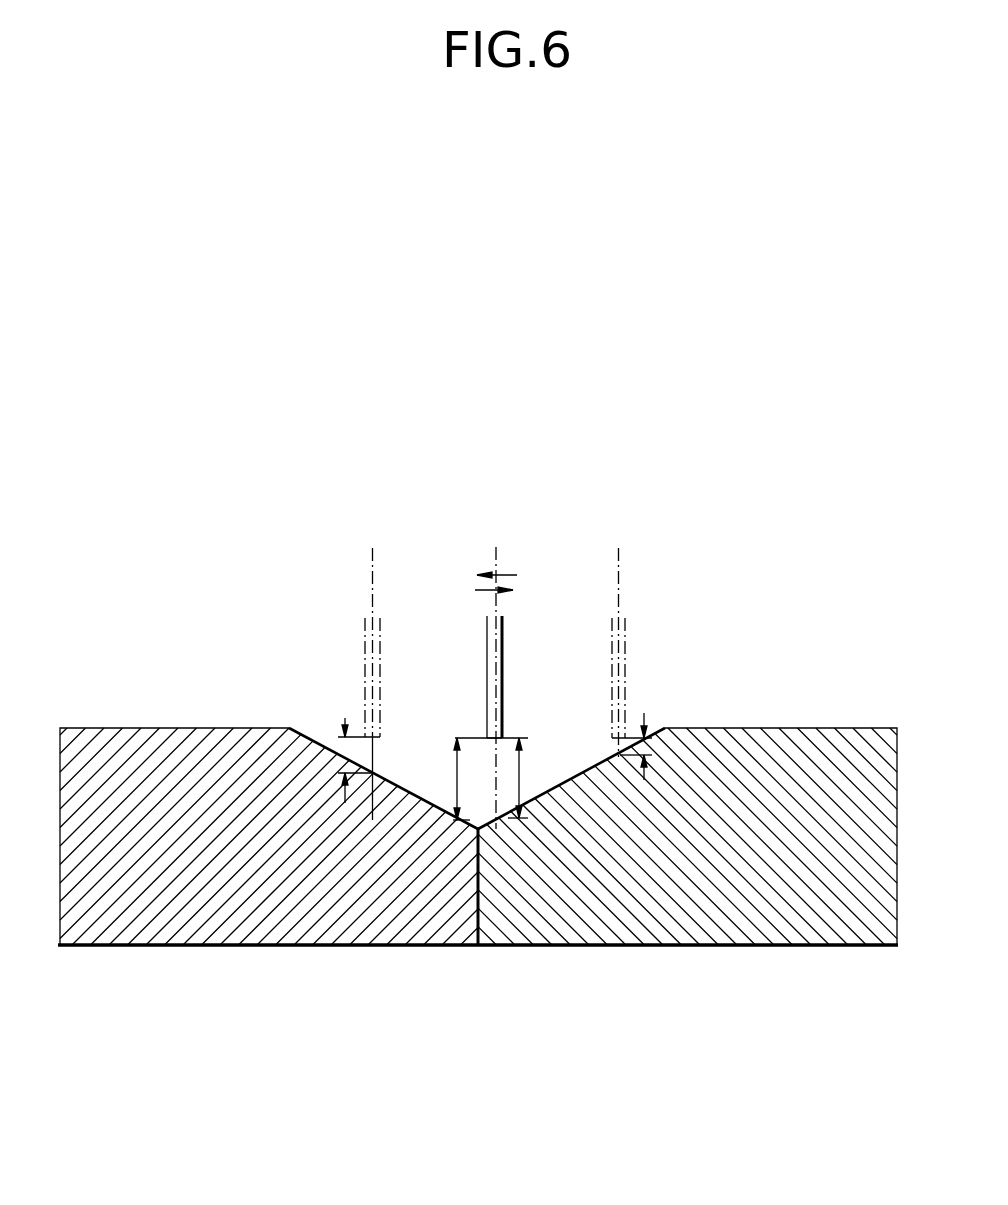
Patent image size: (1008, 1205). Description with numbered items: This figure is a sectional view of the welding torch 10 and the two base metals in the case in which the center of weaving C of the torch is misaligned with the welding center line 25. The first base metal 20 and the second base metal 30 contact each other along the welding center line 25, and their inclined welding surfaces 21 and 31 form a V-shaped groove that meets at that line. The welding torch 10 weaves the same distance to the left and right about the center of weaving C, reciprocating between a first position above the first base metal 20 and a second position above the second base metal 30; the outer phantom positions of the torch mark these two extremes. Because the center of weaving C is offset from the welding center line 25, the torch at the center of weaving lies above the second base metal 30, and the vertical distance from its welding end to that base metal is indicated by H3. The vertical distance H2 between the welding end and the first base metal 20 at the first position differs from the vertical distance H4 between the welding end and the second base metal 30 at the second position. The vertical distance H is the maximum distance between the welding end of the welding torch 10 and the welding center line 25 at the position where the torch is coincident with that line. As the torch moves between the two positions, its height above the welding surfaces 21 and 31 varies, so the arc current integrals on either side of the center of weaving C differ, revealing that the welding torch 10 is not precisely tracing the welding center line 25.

The welding torch 10 is at (505, 643).
The first base metal 20 is at (162, 753).
The welding surface of first base metal 21 is at (378, 773).
The welding center line 25 is at (480, 845).
The second base metal 30 is at (828, 757).
The welding surface of second base metal 31 is at (585, 770).
The center of weaving C is at (497, 548).
The vertical distance H is at (457, 773).
The vertical distance H2 is at (343, 748).
The vertical distance H3 is at (538, 778).
The vertical distance H4 is at (645, 742).